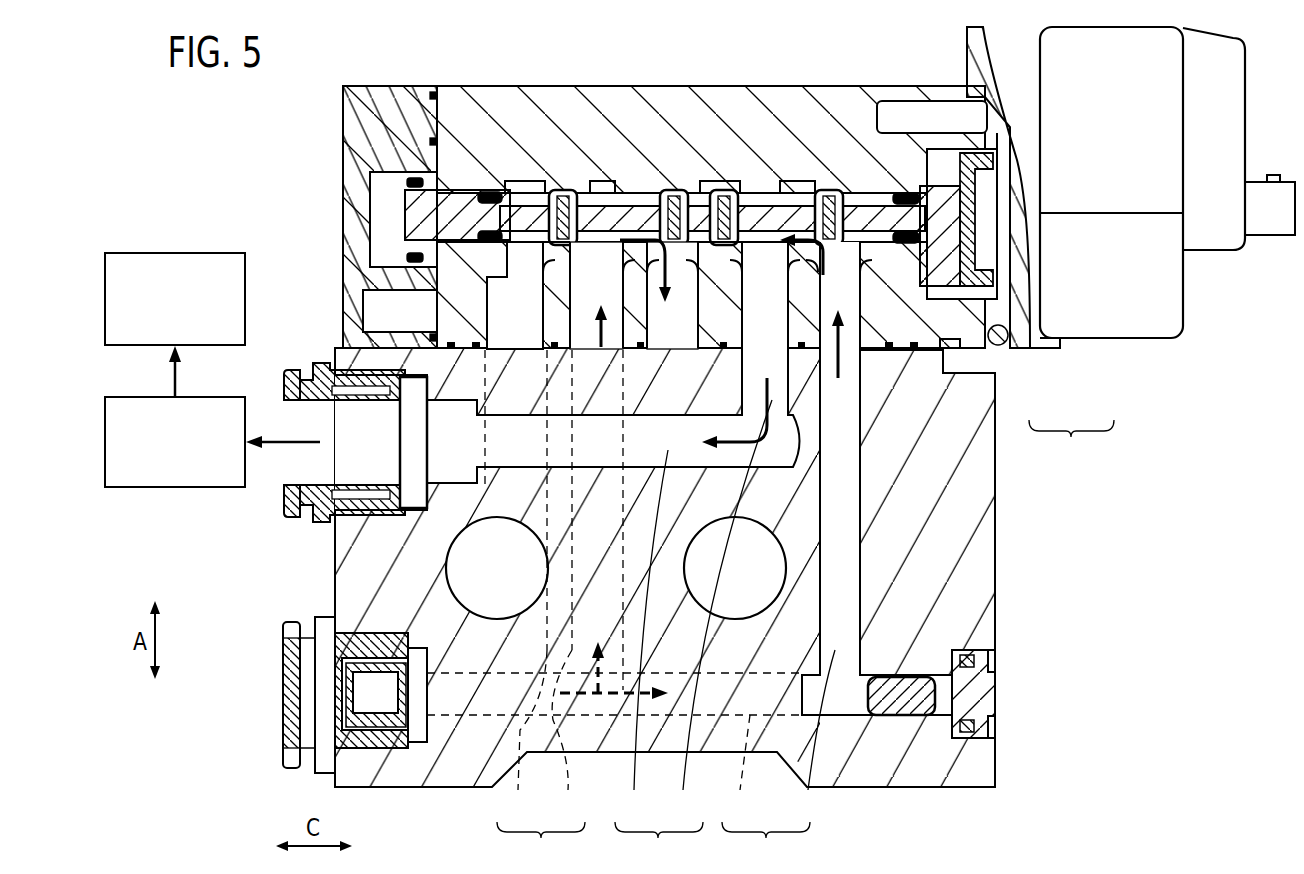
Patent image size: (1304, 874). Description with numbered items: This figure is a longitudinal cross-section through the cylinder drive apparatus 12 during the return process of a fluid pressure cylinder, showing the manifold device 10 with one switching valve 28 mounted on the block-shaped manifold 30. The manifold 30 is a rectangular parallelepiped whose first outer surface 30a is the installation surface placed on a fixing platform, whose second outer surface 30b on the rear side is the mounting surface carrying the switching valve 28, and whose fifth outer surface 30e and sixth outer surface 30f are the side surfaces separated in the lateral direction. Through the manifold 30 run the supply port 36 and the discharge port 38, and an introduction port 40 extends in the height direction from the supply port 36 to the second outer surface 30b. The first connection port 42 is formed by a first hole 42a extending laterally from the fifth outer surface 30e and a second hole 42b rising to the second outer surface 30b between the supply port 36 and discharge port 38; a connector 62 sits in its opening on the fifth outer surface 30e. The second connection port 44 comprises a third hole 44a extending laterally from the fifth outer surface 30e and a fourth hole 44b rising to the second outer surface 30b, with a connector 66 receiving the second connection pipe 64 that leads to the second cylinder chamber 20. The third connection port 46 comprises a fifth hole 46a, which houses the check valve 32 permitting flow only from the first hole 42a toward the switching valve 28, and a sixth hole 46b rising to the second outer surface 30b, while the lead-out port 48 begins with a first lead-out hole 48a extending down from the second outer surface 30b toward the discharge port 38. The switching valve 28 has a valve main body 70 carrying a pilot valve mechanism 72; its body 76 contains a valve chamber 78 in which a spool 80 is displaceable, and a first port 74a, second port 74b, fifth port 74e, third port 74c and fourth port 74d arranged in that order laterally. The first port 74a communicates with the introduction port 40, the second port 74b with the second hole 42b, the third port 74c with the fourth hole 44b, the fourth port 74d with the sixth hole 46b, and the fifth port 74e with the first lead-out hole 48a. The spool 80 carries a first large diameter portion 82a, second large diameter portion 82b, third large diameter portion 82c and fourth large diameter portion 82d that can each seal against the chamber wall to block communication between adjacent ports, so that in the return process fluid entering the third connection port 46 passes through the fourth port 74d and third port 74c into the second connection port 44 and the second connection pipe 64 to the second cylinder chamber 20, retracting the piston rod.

The manifold device 10 is at (310, 237).
The cylinder drive apparatus 12 is at (255, 141).
The second cylinder chamber 20 is at (158, 253).
The switching valve 28 is at (1071, 444).
The manifold 30 is at (995, 530).
The first outer surface 30a is at (920, 790).
The second outer surface 30b is at (350, 325).
The fifth outer surface 30e is at (335, 598).
The sixth outer surface 30f is at (995, 590).
The check valve 32 is at (987, 693).
The supply port 36 is at (480, 565).
The discharge port 38 is at (710, 590).
The introduction port 40 is at (485, 500).
The first connection port 42 is at (541, 843).
The first hole 42a is at (518, 809).
The second hole 42b is at (566, 809).
The second connection port 44 is at (659, 843).
The third hole 44a is at (642, 636).
The fourth hole 44b is at (719, 611).
The third connection port 46 is at (766, 843).
The fifth hole 46a is at (741, 809).
The sixth hole 46b is at (804, 736).
The lead-out port 48 is at (767, 338).
The first lead-out hole 48a is at (742, 380).
The connector 62 is at (290, 665).
The second connection pipe 64 is at (125, 397).
The connector 66 is at (287, 505).
The valve main body 70 is at (1010, 362).
The pilot valve mechanism 72 is at (1095, 352).
The first port 74a is at (515, 345).
The second port 74b is at (567, 376).
The third port 74c is at (760, 282).
The fourth port 74d is at (862, 365).
The fifth port 74e is at (666, 391).
The body 76 is at (780, 100).
The valve chamber 78 is at (527, 190).
The spool 80 is at (618, 215).
The first large diameter portion 82a is at (561, 190).
The second large diameter portion 82b is at (674, 190).
The third large diameter portion 82c is at (724, 190).
The fourth large diameter portion 82d is at (829, 190).